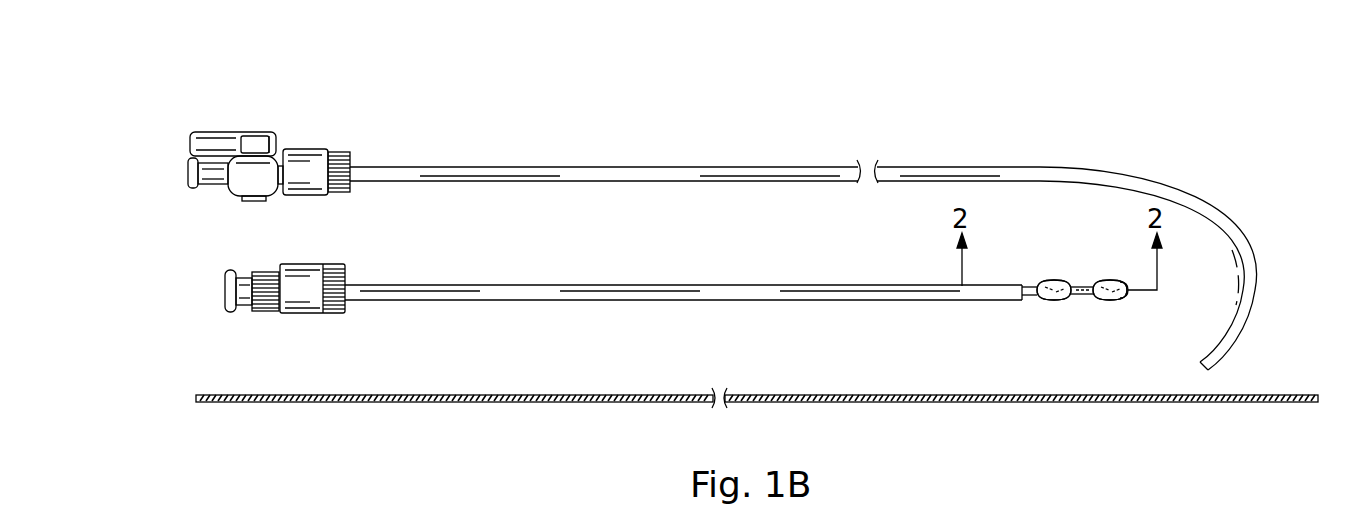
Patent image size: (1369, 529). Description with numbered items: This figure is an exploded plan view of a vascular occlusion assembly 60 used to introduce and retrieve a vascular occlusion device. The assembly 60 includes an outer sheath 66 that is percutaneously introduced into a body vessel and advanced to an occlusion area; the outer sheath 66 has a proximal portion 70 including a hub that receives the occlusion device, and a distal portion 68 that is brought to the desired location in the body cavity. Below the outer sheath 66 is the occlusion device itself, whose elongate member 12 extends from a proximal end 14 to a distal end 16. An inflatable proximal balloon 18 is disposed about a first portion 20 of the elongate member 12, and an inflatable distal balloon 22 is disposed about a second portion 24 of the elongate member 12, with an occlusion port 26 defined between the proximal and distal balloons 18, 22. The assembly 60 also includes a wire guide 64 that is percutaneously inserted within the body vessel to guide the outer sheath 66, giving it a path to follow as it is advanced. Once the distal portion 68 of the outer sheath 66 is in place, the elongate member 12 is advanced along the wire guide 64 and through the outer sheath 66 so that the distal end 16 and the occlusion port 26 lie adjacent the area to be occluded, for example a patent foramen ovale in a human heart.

The vascular occlusion assembly 60 is at (240, 108).
The proximal portion 70 is at (352, 160).
The outer sheath 66 is at (651, 167).
The distal portion 68 is at (1228, 350).
The proximal end 14 is at (366, 306).
The elongate member 12 is at (447, 285).
The inflatable proximal balloon 18 is at (1047, 280).
The occlusion port 26 is at (1082, 286).
The inflatable distal balloon 22 is at (1108, 280).
The first portion 20 is at (1018, 328).
The second portion 24 is at (1077, 328).
The distal end 16 is at (1129, 292).
The wire guide 64 is at (524, 394).